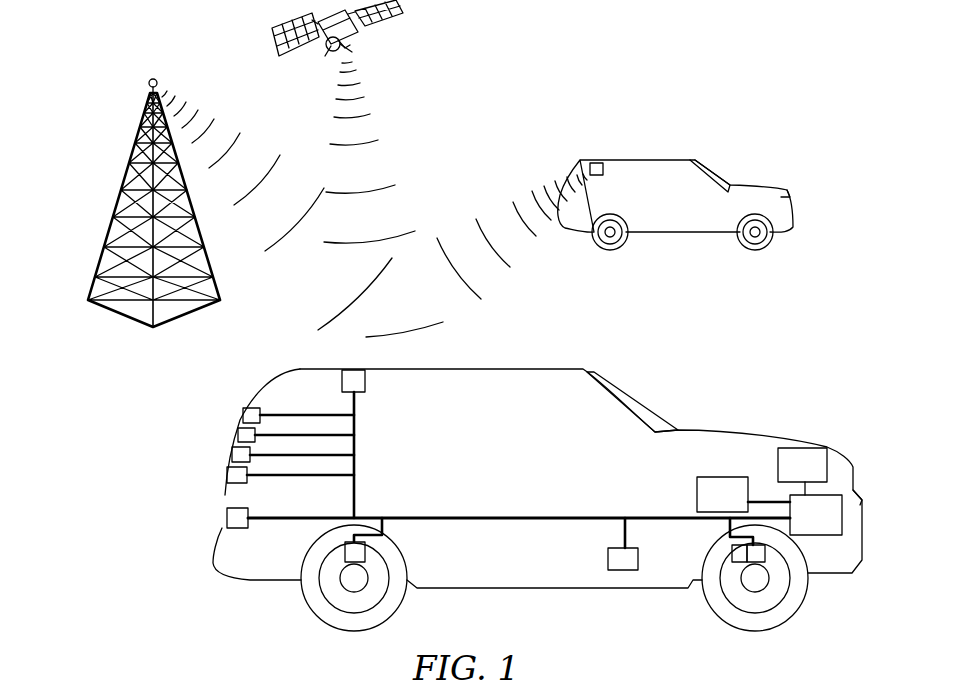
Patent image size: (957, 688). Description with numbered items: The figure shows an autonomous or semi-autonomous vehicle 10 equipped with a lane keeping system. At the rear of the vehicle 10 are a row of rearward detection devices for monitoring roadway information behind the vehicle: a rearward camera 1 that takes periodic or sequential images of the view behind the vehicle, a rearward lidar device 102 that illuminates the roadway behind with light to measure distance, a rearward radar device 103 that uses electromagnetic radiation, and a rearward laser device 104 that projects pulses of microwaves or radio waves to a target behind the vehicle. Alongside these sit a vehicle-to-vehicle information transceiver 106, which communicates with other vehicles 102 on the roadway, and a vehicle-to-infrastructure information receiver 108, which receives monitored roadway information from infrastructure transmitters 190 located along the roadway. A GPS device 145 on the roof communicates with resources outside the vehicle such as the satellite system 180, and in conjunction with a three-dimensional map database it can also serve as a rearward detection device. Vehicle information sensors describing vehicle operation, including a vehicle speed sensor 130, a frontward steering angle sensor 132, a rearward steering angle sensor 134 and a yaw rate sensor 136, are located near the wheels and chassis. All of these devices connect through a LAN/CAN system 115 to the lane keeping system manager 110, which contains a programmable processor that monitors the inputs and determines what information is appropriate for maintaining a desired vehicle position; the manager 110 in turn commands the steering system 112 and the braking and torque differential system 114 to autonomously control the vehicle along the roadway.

The rearward camera 1 is at (236, 516).
The vehicle 10 is at (512, 368).
The rearward lidar device 102 is at (654, 158).
The rearward radar device 103 is at (232, 474).
The rearward laser device 104 is at (235, 454).
The vehicle-to-vehicle information transceiver 106 is at (240, 434).
The vehicle-to-infrastructure information receiver 108 is at (245, 412).
The lane keeping system manager 110 is at (834, 527).
The steering system 112 is at (820, 477).
The braking and torque differential system 114 is at (740, 507).
The LAN/CAN system 115 is at (491, 517).
The vehicle speed sensor 130 is at (765, 556).
The frontward steering angle sensor 132 is at (735, 556).
The rearward steering angle sensor 134 is at (347, 553).
The yaw rate sensor 136 is at (613, 560).
The GPS device 145 is at (348, 380).
The satellite system 180 is at (358, 34).
The infrastructure transmitters 190 is at (131, 179).